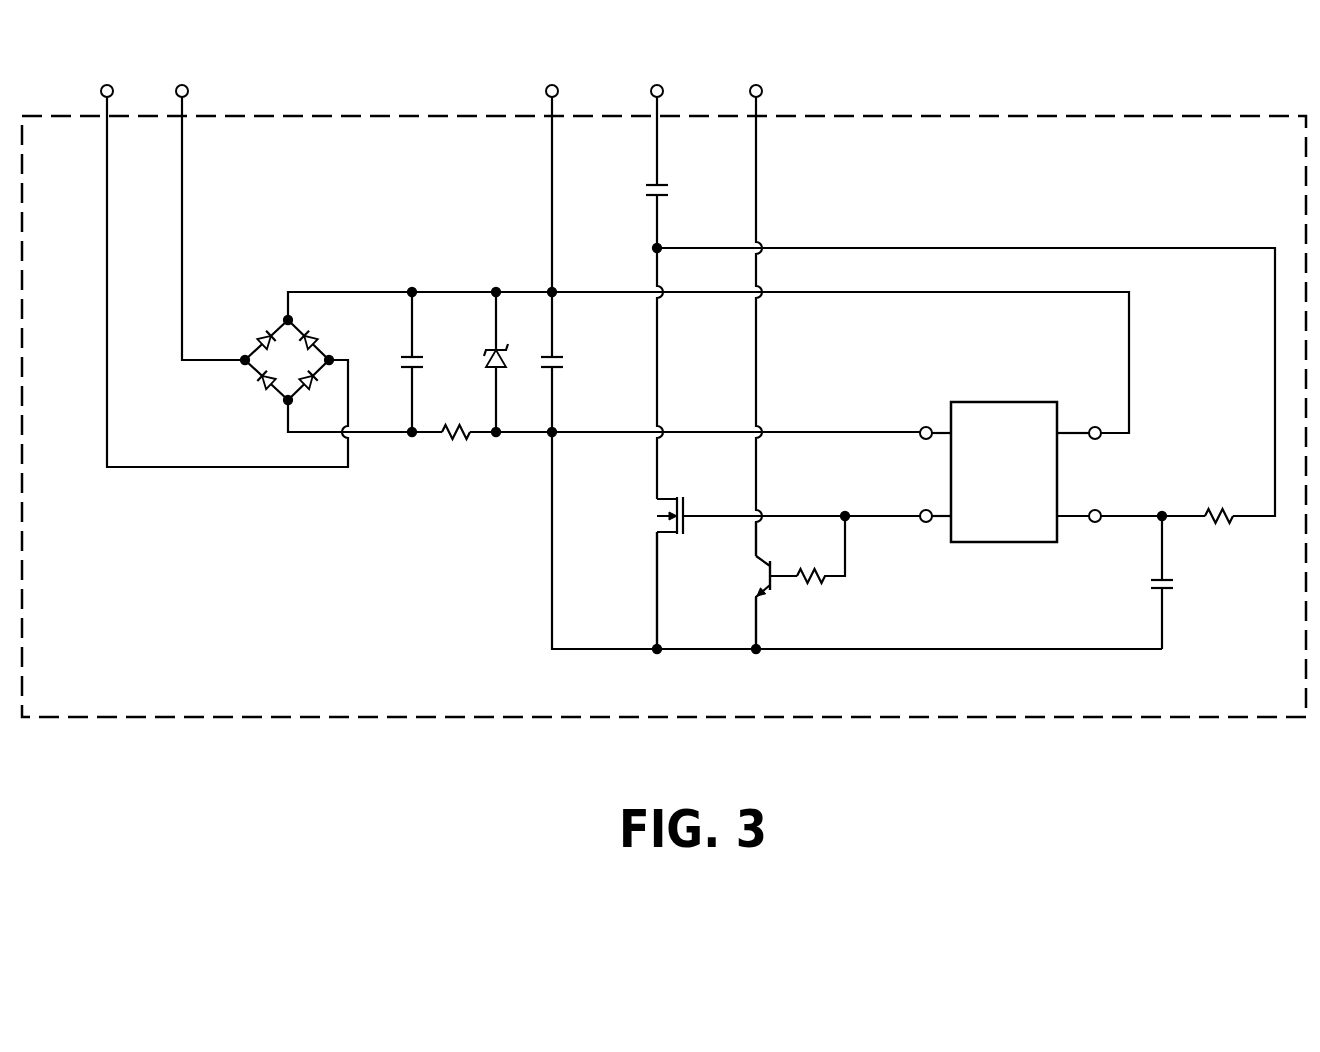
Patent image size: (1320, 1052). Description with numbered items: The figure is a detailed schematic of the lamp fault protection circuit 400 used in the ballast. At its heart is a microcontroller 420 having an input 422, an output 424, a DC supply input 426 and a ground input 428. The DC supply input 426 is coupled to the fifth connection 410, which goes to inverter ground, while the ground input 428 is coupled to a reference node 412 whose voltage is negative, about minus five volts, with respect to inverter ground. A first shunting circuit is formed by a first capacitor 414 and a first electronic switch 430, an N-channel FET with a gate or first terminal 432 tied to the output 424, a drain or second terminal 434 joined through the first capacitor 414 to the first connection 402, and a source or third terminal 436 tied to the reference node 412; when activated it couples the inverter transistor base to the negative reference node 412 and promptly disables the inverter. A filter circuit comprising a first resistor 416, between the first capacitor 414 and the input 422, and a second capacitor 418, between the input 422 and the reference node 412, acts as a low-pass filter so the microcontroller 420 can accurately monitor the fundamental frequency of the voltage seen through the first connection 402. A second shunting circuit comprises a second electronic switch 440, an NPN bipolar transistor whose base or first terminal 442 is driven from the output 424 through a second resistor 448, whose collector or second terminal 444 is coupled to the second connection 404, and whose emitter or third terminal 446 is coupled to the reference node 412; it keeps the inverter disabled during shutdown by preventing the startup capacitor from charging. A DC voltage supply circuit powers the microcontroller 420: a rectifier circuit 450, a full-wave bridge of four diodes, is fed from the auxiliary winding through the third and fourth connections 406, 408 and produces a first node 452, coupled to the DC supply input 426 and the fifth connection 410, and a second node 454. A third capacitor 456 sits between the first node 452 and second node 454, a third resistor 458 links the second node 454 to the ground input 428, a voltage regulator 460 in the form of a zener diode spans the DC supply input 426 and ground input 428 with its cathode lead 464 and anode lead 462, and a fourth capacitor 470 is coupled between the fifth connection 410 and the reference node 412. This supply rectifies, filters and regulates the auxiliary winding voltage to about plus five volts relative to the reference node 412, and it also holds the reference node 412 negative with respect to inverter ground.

The lamp fault protection circuit 400 is at (156, 651).
The first connection 402 is at (651, 90).
The second connection 404 is at (762, 90).
The third connection 406 is at (101, 90).
The fourth connection 408 is at (188, 90).
The fifth connection 410 is at (548, 87).
The reference node 412 is at (760, 654).
The first capacitor 414 is at (662, 186).
The first resistor 416 is at (1222, 511).
The second capacitor 418 is at (1164, 580).
The microcontroller 420 is at (1022, 484).
The input 422 is at (1100, 511).
The output 424 is at (927, 510).
The DC supply input 426 is at (1097, 427).
The ground input 428 is at (928, 427).
The first electronic switch 430 is at (660, 516).
The first terminal 432 is at (685, 508).
The second terminal 434 is at (654, 470).
The third terminal 436 is at (654, 548).
The second electronic switch 440 is at (762, 578).
The first terminal 442 is at (784, 571).
The second terminal 444 is at (754, 547).
The third terminal 446 is at (752, 610).
The second resistor 448 is at (808, 572).
The rectifier circuit 450 is at (306, 372).
The first node 452 is at (411, 289).
The second node 454 is at (411, 437).
The third capacitor 456 is at (407, 356).
The third resistor 458 is at (453, 440).
The voltage regulator 460 is at (490, 362).
The anode lead 462 is at (494, 386).
The cathode lead 464 is at (494, 332).
The fourth capacitor 470 is at (548, 353).